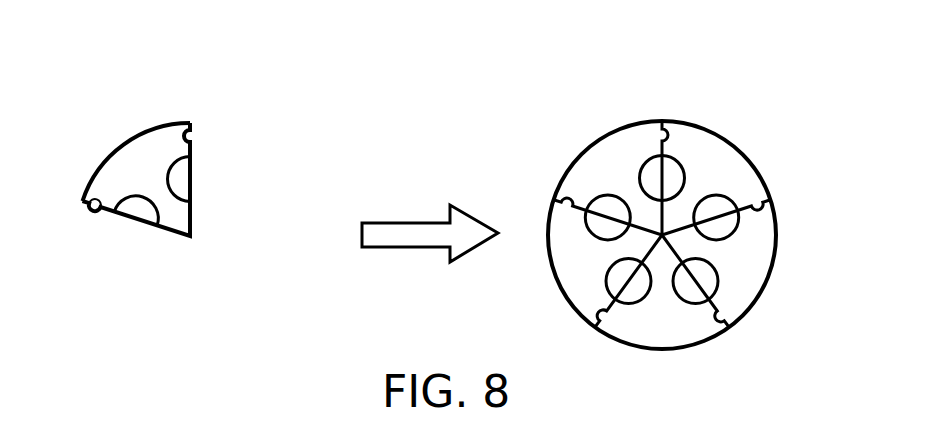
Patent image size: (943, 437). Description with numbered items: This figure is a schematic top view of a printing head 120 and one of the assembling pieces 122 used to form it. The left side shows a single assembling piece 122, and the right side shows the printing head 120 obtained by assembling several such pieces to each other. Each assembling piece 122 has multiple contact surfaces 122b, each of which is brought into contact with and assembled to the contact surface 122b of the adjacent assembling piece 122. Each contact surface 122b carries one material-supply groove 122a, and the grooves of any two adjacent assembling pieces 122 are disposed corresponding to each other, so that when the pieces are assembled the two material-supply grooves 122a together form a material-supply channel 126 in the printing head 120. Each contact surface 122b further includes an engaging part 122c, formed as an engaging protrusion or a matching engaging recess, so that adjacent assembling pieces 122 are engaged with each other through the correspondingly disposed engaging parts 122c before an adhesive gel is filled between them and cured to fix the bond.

The printing head 120 is at (752, 124).
The assembling piece 122 is at (118, 150).
The material-supply groove 122a is at (173, 170).
The contact surface 122b is at (193, 220).
The engaging part 122c is at (195, 133).
The material-supply channel 126 is at (592, 202).